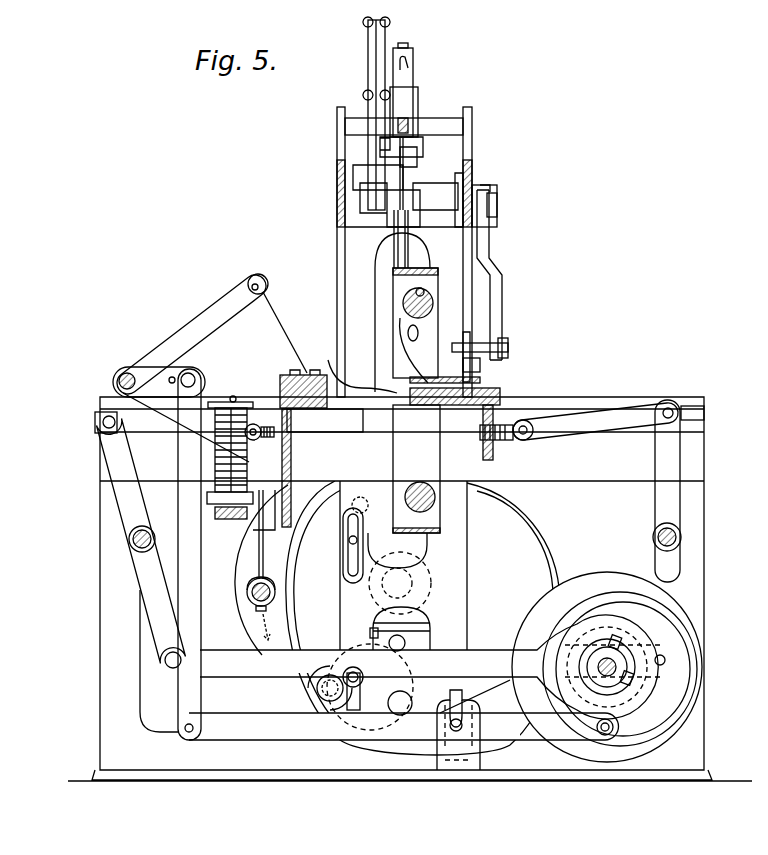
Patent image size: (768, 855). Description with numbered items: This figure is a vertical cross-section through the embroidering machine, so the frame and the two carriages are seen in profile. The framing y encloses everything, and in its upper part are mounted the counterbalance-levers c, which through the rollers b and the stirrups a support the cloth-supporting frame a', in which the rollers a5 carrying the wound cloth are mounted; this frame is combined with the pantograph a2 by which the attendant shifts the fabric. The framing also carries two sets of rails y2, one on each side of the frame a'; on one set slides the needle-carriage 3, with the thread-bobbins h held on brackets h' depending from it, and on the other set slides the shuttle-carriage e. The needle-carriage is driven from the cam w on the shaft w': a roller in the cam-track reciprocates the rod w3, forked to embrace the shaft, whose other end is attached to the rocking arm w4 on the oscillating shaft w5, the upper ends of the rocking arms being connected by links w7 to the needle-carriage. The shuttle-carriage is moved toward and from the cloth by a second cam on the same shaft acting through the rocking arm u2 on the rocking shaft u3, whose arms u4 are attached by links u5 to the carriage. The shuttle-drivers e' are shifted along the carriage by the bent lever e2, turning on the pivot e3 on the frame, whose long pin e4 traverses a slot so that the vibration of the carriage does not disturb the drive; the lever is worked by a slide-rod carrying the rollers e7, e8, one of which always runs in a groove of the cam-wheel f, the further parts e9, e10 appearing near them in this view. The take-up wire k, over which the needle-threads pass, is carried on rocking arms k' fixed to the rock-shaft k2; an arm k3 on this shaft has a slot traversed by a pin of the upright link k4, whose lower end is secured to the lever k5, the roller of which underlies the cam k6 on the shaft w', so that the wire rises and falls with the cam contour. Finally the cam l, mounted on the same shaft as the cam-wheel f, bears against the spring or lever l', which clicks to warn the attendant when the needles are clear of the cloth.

The pantograph a2 is at (366, 72).
The counterbalance-levers c is at (418, 102).
The framing of the machine y is at (337, 178).
The rollers b is at (417, 165).
The cloth-supporting frame a' is at (415, 400).
The rollers a5 is at (433, 304).
The bent lever e2 is at (510, 285).
The pivot e3 is at (498, 206).
The pin e4 is at (480, 357).
The shuttle-carriage e is at (467, 417).
The shuttle-drivers e' is at (388, 376).
The block 3 is at (321, 401).
The brackets h' is at (281, 469).
The thread-bobbins h is at (240, 447).
The stirrups a is at (254, 565).
The take-up wire k is at (212, 327).
The rocking arms k' is at (212, 324).
The rock-shaft k2 is at (117, 374).
The arm k3 is at (169, 382).
The upright link k4 is at (190, 554).
The links w7 is at (150, 427).
The rocking arm w4 is at (141, 544).
The oscillating shaft w5 is at (130, 551).
The cam-wheel f is at (423, 618).
The cam l is at (387, 561).
The spring or lever l' is at (353, 553).
The cam block e10 is at (400, 628).
The roller e7 is at (406, 644).
The roller e9 is at (330, 688).
The roller e8 is at (374, 687).
The rod w3 is at (429, 667).
The lever k5 is at (404, 710).
The cam w is at (607, 667).
The cam k6 is at (612, 662).
The shaft w' is at (622, 670).
The arms u4 is at (667, 491).
The rocking shaft u3 is at (677, 537).
The rocking arm u2 is at (664, 573).
The links u5 is at (579, 421).
The rails y2 is at (544, 461).